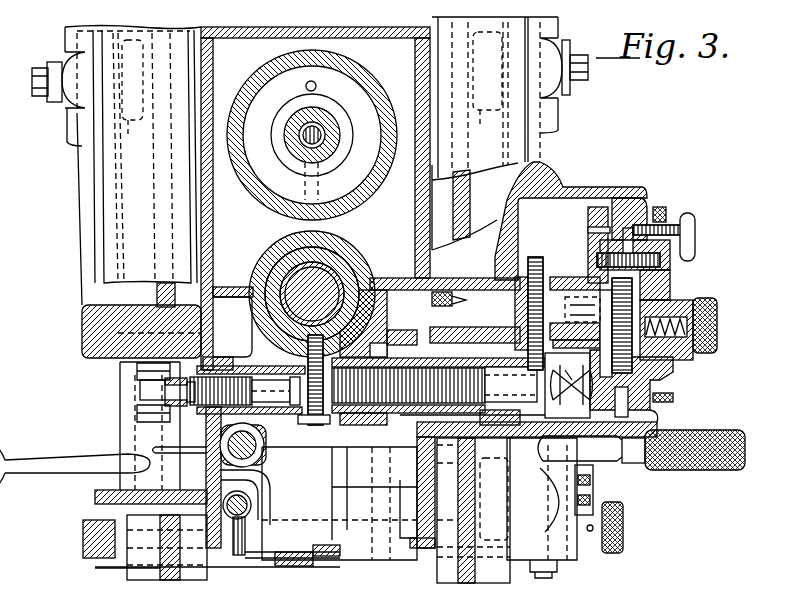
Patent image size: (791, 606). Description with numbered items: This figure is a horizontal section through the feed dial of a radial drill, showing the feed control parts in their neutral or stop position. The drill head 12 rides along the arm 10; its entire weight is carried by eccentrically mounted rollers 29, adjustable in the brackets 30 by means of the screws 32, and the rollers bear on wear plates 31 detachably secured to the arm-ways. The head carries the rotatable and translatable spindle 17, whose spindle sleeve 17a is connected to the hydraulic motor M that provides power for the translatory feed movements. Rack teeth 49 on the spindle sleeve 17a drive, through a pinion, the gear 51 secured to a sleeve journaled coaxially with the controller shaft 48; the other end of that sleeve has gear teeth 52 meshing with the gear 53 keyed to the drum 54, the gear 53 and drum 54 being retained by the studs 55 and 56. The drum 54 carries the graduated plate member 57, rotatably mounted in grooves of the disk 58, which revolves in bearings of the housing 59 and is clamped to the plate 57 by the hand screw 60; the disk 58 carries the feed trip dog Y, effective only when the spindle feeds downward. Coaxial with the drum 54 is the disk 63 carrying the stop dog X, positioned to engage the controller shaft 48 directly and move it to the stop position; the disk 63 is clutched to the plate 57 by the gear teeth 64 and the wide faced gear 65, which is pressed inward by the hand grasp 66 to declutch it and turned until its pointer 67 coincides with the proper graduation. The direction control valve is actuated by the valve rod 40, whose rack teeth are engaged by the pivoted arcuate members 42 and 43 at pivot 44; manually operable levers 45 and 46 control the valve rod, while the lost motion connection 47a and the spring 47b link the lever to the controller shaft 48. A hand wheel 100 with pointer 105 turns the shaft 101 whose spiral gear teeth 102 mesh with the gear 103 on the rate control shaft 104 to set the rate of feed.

The arm 10 is at (105, 215).
The drill head 12 is at (240, 62).
The hydraulic motor M is at (362, 63).
The rollers 29 is at (312, 93).
The brackets 30 is at (62, 46).
The wear plates 31 is at (140, 270).
The spindle 17 is at (370, 258).
The spindle sleeve 17a is at (275, 268).
The rack teeth 49 is at (232, 327).
The gear 51 is at (306, 372).
The controller shaft 48 is at (275, 398).
The gear teeth 52 is at (575, 420).
The stop dog X is at (571, 365).
The gear 53 is at (540, 240).
The drum 54 is at (565, 285).
The stud 55 is at (458, 300).
The stud 56 is at (596, 275).
The plate member 57 is at (668, 284).
The disk 58 is at (648, 195).
The housing 59 is at (620, 185).
The hand screw 60 is at (695, 225).
The disk 63 is at (588, 210).
The gear teeth 64 is at (588, 232).
The wide faced gear 65 is at (673, 365).
The hand grasp 66 is at (730, 336).
The pointer 67 is at (680, 297).
The feed trip dog Y is at (648, 412).
The arcuate member 43 is at (196, 449).
The pivot 44 is at (130, 415).
The lost motion connection 47a is at (140, 386).
The spring 47b is at (190, 398).
The lever 46 is at (62, 476).
The valve rod 40 is at (252, 455).
The arcuate member 42 is at (302, 456).
The shaft 101 is at (252, 497).
The spiral gear teeth 102 is at (250, 505).
The gear 103 is at (250, 516).
The rate control shaft 104 is at (415, 525).
The screws 32 is at (575, 575).
The pointer 105 is at (600, 477).
The hand wheel 100 is at (623, 500).
The lever 45 is at (692, 472).